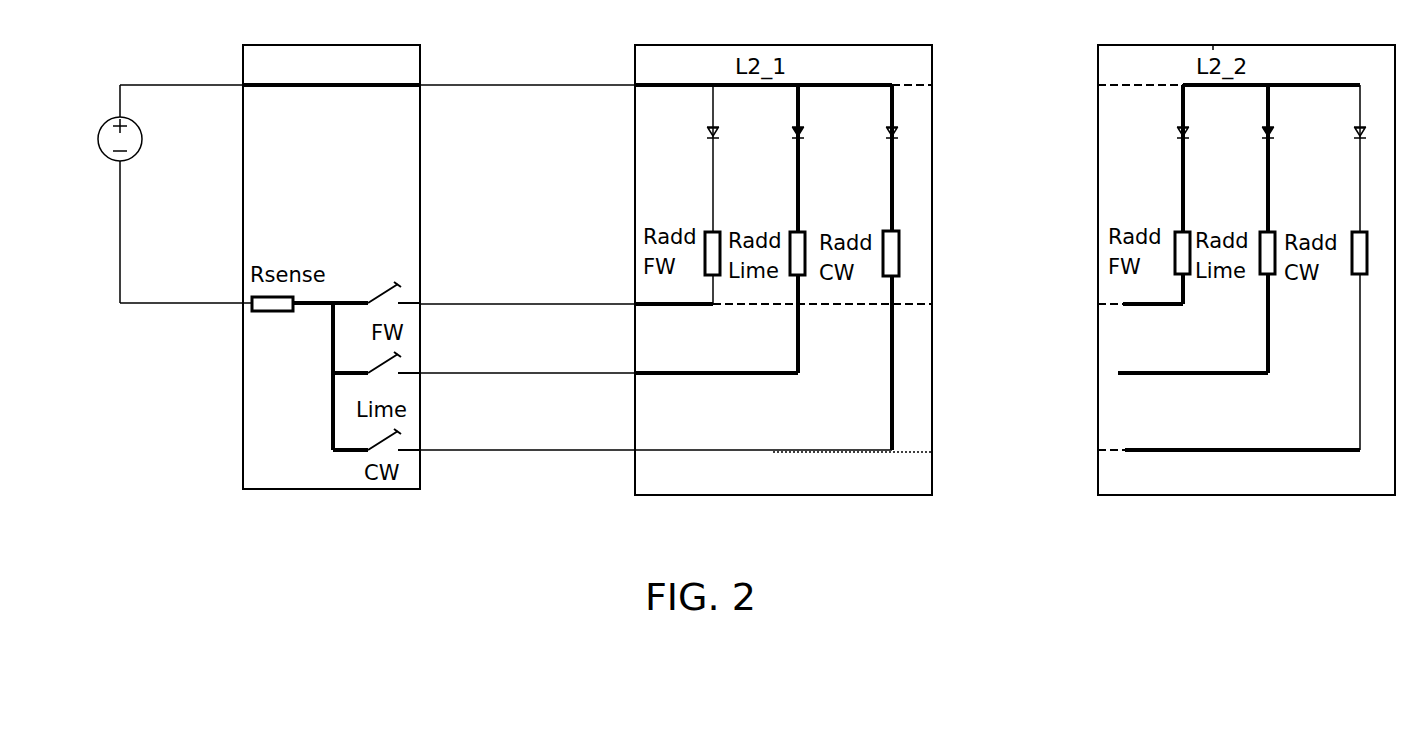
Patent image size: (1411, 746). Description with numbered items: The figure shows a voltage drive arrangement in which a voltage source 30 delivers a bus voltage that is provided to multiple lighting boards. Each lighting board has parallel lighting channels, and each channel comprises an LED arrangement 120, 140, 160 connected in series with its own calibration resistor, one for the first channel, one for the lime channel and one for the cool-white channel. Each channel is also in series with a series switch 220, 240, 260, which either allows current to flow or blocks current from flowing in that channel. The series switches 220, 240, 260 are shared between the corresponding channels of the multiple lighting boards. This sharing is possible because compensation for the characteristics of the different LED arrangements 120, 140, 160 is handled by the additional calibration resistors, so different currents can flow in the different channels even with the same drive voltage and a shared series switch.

The voltage source 30 is at (143, 140).
The LED arrangement 120 is at (708, 136).
The LED arrangement 140 is at (793, 134).
The LED arrangement 160 is at (887, 134).
The series switch 220 is at (400, 293).
The series switch 240 is at (400, 357).
The series switch 260 is at (400, 435).